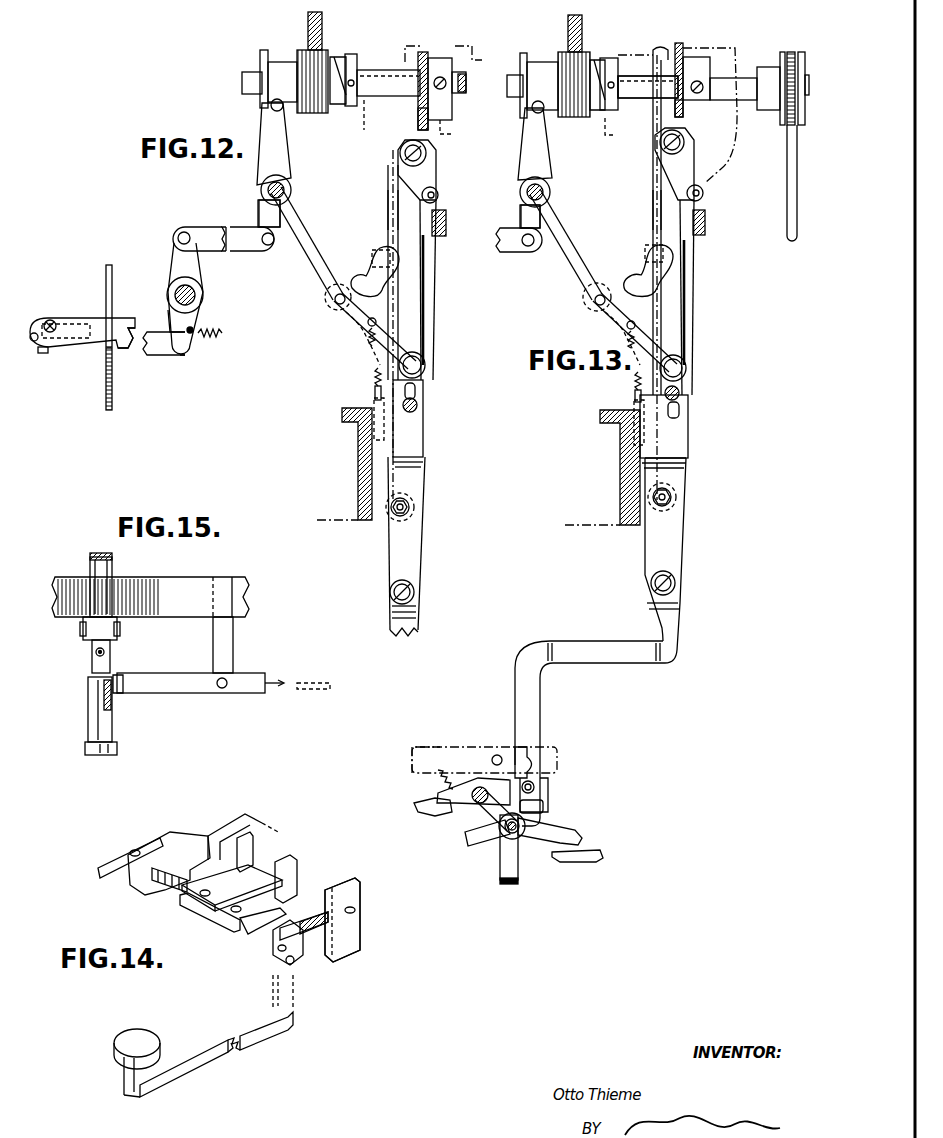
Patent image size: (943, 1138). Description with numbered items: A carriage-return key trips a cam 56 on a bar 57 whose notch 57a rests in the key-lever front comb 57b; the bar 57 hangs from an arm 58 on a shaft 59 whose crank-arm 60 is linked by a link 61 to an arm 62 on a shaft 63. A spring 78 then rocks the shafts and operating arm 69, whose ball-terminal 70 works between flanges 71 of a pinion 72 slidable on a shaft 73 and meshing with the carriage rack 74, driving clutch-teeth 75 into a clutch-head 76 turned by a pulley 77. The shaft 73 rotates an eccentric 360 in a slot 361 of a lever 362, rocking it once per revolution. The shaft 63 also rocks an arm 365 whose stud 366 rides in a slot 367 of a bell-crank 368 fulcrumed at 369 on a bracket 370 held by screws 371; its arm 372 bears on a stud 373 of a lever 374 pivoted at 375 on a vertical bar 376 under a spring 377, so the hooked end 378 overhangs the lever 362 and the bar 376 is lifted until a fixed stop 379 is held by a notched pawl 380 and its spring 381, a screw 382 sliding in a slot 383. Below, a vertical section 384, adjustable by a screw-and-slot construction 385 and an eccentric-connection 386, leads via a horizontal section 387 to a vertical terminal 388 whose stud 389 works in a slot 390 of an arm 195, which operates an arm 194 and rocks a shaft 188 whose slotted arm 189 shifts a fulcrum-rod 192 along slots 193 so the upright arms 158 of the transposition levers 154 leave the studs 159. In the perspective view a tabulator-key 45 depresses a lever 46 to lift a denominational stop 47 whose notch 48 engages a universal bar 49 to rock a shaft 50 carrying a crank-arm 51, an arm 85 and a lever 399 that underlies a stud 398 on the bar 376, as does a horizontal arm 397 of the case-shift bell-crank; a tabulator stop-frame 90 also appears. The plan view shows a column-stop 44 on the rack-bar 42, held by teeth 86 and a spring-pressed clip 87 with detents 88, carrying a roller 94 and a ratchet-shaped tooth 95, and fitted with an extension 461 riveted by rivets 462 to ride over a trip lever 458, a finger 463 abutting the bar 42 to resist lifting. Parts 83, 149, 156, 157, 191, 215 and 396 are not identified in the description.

In FIG. 15, the rack-bar 42 is at (150, 597).
In FIG. 15, the column-stop 44 is at (88, 700).
In FIG. 14, the tabulator-key 45 is at (136, 1030).
In FIG. 14, the tabulator-key-lever 46 is at (236, 1056).
In FIG. 14, the denominational stop 47 is at (253, 858).
In FIG. 14, the notch 48 is at (297, 886).
In FIG. 14, the universal bar 49 is at (232, 888).
In FIG. 14, the shaft 50 is at (206, 922).
In FIG. 14, the crank-arm 51 is at (112, 878).
In FIG. 12, the tripping cam 56 is at (44, 353).
In FIG. 12, the bar 57 is at (160, 356).
In FIG. 12, the notch 57a is at (125, 350).
In FIG. 12, the key-lever front comb 57b is at (107, 384).
In FIG. 12, the arm 58 is at (171, 325).
In FIG. 12, the shaft 59 is at (203, 296).
In FIG. 12, the crank-arm 60 is at (185, 298).
In FIG. 12, the link 61 is at (230, 251).
In FIG. 13, the link 61 is at (519, 240).
In FIG. 12, the arm 62 is at (259, 208).
In FIG. 13, the arm 62 is at (521, 211).
In FIG. 12, the shaft 63 is at (290, 188).
In FIG. 13, the shaft 63 is at (550, 192).
In FIG. 12, the operating arm 69 is at (274, 144).
In FIG. 13, the operating arm 69 is at (535, 144).
In FIG. 12, the anti-friction ball-terminal 70 is at (270, 111).
In FIG. 13, the anti-friction ball-terminal 70 is at (533, 112).
In FIG. 12, the flanges 71 is at (265, 54).
In FIG. 13, the flanges 71 is at (526, 66).
In FIG. 12, the pinion 72 is at (311, 114).
In FIG. 13, the pinion 72 is at (569, 118).
In FIG. 12, the shaft 73 is at (242, 80).
In FIG. 13, the shaft 73 is at (646, 96).
In FIG. 12, the rack 74 is at (322, 24).
In FIG. 13, the rack 74 is at (570, 28).
In FIG. 12, the clutch-teeth 75 is at (340, 57).
In FIG. 13, the clutch-teeth 75 is at (595, 62).
In FIG. 12, the clutch-head 76 is at (357, 58).
In FIG. 13, the clutch-head 76 is at (613, 58).
In FIG. 13, the pulley 77 is at (782, 120).
In FIG. 12, the spring 78 is at (219, 337).
In FIG. 13, the rod 83 is at (787, 211).
In FIG. 14, the arm 85 is at (145, 845).
In FIG. 15, the teeth 86 is at (112, 558).
In FIG. 15, the spring-pressed clip 87 is at (83, 628).
In FIG. 15, the detents 88 is at (90, 556).
In FIG. 14, the tabulator stop-frame 90 is at (260, 821).
In FIG. 15, the anti-friction roller 94 is at (117, 748).
In FIG. 15, the ratchet-shaped tooth 95 is at (111, 705).
In FIG. 13, the frame 149 is at (412, 770).
In FIG. 13, the transposition levers 154 is at (586, 862).
In FIG. 13, the arm 156 is at (578, 836).
In FIG. 13, the bar 157 is at (498, 872).
In FIG. 13, the upright arms 158 is at (527, 753).
In FIG. 13, the studs 159 is at (496, 755).
In FIG. 13, the shaft 188 is at (474, 803).
In FIG. 13, the slotted arm 189 is at (496, 810).
In FIG. 13, the pivot pin 191 is at (520, 829).
In FIG. 13, the fulcrum-rod 192 is at (518, 839).
In FIG. 13, the slots 193 is at (488, 843).
In FIG. 13, the arm 194 is at (460, 788).
In FIG. 13, the arm 195 is at (548, 792).
In FIG. 13, the wedge 215 is at (430, 816).
In FIG. 12, the eccentric 360 is at (430, 108).
In FIG. 13, the eccentric 360 is at (697, 78).
In FIG. 12, the slot 361 is at (418, 68).
In FIG. 13, the slot 361 is at (684, 110).
In FIG. 12, the lever 362 is at (428, 122).
In FIG. 13, the lever 362 is at (681, 45).
In FIG. 12, the arm 365 is at (307, 243).
In FIG. 13, the arm 365 is at (566, 244).
In FIG. 12, the stud 366 is at (339, 312).
In FIG. 13, the stud 366 is at (586, 306).
In FIG. 12, the slot 367 is at (326, 300).
In FIG. 13, the slot 367 is at (583, 296).
In FIG. 12, the bell-crank 368 is at (388, 348).
In FIG. 13, the bell-crank 368 is at (643, 338).
In FIG. 12, the fulcrum 369 is at (426, 365).
In FIG. 13, the fulcrum 369 is at (689, 363).
In FIG. 12, the bracket 370 is at (407, 423).
In FIG. 13, the bracket 370 is at (688, 450).
In FIG. 12, the screws 371 is at (358, 447).
In FIG. 13, the screws 371 is at (623, 467).
In FIG. 12, the arm 372 is at (388, 209).
In FIG. 13, the arm 372 is at (653, 208).
In FIG. 12, the stud 373 is at (437, 193).
In FIG. 13, the stud 373 is at (688, 191).
In FIG. 12, the lever 374 is at (398, 184).
In FIG. 13, the lever 374 is at (653, 163).
In FIG. 12, the pivot 375 is at (400, 153).
In FIG. 13, the pivot 375 is at (686, 148).
In FIG. 12, the vertical bar 376 is at (434, 297).
In FIG. 13, the vertical bar 376 is at (695, 295).
In FIG. 14, the vertical bar 376 is at (361, 925).
In FIG. 12, the spring 377 is at (440, 225).
In FIG. 13, the spring 377 is at (694, 220).
In FIG. 12, the hooked end 378 is at (423, 52).
In FIG. 13, the hooked end 378 is at (660, 49).
In FIG. 12, the fixed stop 379 is at (381, 266).
In FIG. 13, the fixed stop 379 is at (641, 256).
In FIG. 12, the notched pawl 380 is at (426, 258).
In FIG. 13, the notched pawl 380 is at (688, 258).
In FIG. 12, the spring 381 is at (376, 372).
In FIG. 13, the spring 381 is at (635, 380).
In FIG. 12, the screw 382 is at (418, 408).
In FIG. 13, the screw 382 is at (680, 393).
In FIG. 12, the slot 383 is at (417, 392).
In FIG. 13, the slot 383 is at (680, 412).
In FIG. 12, the vertical section 384 is at (420, 616).
In FIG. 13, the vertical section 384 is at (680, 604).
In FIG. 12, the screw-and-slot construction 385 is at (414, 590).
In FIG. 13, the screw-and-slot construction 385 is at (651, 585).
In FIG. 12, the eccentric-connection 386 is at (414, 508).
In FIG. 13, the eccentric-connection 386 is at (675, 500).
In FIG. 13, the horizontal section 387 is at (596, 659).
In FIG. 13, the vertical terminal 388 is at (540, 708).
In FIG. 13, the stud 389 is at (557, 770).
In FIG. 13, the slot 390 is at (544, 808).
In FIG. 14, the bar 396 is at (263, 919).
In FIG. 14, the horizontal arm 397 is at (292, 928).
In FIG. 14, the stud 398 is at (333, 888).
In FIG. 14, the lever 399 is at (295, 960).
In FIG. 15, the trip lever 458 is at (317, 690).
In FIG. 15, the extension 461 is at (189, 693).
In FIG. 15, the rivets 462 is at (121, 678).
In FIG. 15, the finger 463 is at (233, 646).